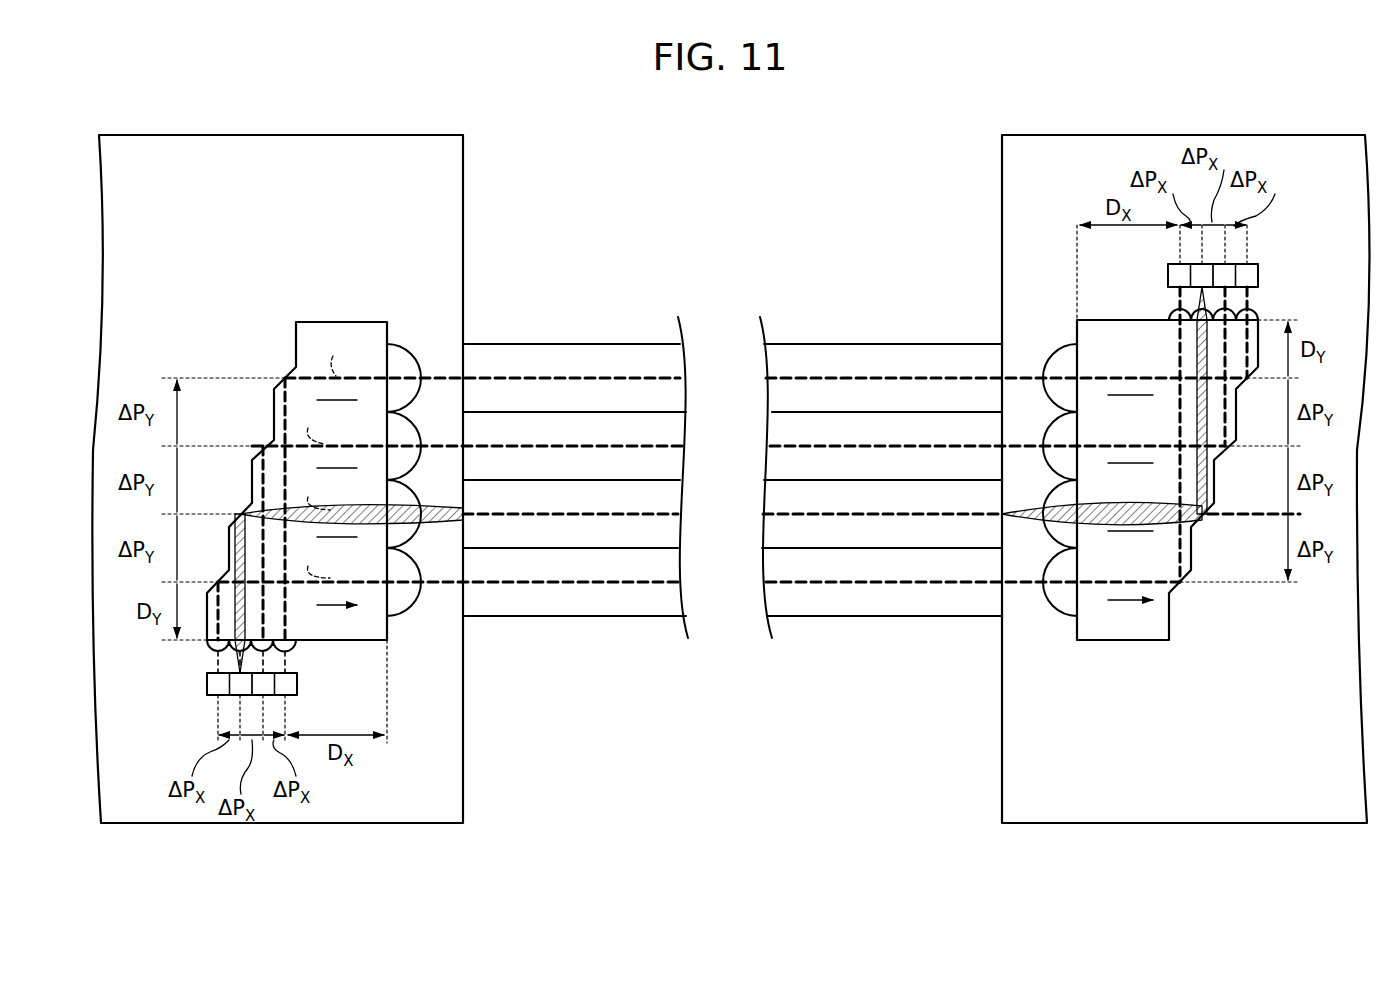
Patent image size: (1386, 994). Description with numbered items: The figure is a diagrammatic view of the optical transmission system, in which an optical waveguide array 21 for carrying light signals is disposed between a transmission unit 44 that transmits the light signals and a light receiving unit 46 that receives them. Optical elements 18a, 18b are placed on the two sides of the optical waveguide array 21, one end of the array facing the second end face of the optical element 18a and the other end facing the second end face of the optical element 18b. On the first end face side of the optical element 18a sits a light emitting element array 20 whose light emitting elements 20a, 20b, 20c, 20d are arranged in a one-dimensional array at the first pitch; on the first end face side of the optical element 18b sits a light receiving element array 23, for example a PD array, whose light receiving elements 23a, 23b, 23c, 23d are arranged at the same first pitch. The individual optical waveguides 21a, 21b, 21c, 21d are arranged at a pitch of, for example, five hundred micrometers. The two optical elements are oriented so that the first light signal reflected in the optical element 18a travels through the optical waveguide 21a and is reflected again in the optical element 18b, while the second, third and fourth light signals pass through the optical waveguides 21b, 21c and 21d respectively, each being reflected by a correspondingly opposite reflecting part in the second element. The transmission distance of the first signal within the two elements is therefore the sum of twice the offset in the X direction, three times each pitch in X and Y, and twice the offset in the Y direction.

The transmission unit 44 is at (420, 146).
The light receiving unit 46 is at (1035, 146).
The optical waveguide array 21 is at (759, 443).
The optical waveguide 21a is at (460, 585).
The optical waveguide 21b is at (462, 517).
The optical waveguide 21c is at (462, 449).
The optical waveguide 21d is at (462, 381).
The optical element 18a is at (335, 483).
The optical element 18b is at (1130, 482).
The light emitting element array 20 is at (242, 703).
The light emitting element 20a is at (216, 690).
The light emitting element 20b is at (244, 692).
The light emitting element 20c is at (259, 686).
The light emitting element 20d is at (290, 686).
The light receiving element array 23 is at (1214, 261).
The light receiving element 23a is at (1180, 283).
The light receiving element 23b is at (1202, 278).
The light receiving element 23c is at (1222, 278).
The light receiving element 23d is at (1247, 276).